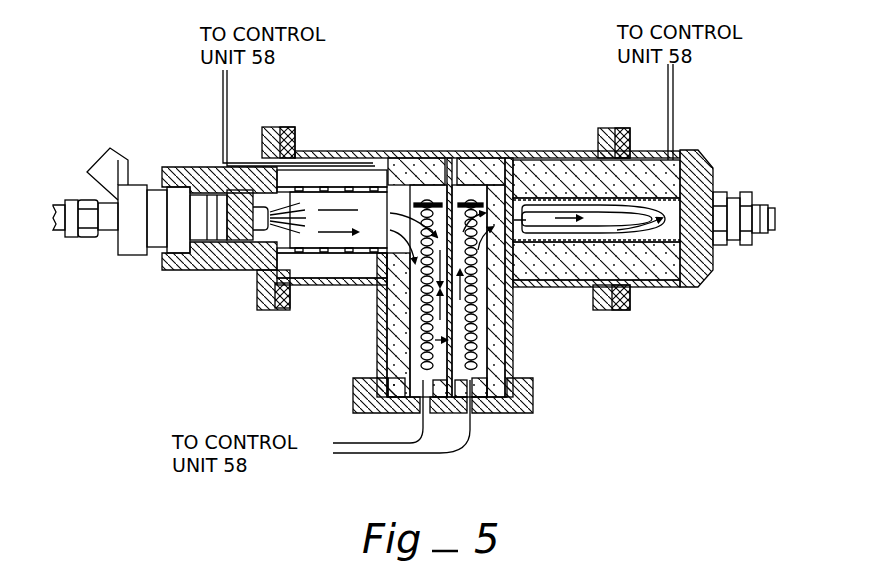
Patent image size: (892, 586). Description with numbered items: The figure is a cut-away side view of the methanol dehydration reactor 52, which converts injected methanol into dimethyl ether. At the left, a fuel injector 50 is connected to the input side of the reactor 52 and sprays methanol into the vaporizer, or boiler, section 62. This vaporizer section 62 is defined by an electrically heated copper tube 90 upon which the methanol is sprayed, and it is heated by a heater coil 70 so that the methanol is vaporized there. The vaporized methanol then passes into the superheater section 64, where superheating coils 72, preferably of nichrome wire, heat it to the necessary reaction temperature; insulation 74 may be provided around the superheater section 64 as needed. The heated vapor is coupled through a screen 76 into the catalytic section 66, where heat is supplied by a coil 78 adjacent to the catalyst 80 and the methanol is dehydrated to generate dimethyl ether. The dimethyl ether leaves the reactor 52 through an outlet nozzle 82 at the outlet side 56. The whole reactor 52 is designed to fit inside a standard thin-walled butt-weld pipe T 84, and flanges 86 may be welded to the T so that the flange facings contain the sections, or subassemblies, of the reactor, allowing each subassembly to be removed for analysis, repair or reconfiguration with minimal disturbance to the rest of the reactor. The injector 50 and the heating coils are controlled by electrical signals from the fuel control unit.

The fuel injector 50 is at (253, 240).
The reactor 52 is at (277, 337).
The outlet side 56 is at (743, 193).
The vaporizer section 62 is at (342, 245).
The superheater section 64 is at (513, 292).
The catalytic section 66 is at (607, 233).
The heater coil 70 is at (360, 253).
The superheating coils 72 is at (428, 340).
The insulation 74 is at (480, 167).
The screen 76 is at (520, 167).
The coil 78 is at (550, 167).
The catalyst 80 is at (663, 265).
The outlet nozzle 82 is at (770, 233).
The pipe T 84 is at (393, 152).
The flanges 86 is at (290, 130).
The electrically heated copper tube 90 is at (353, 168).